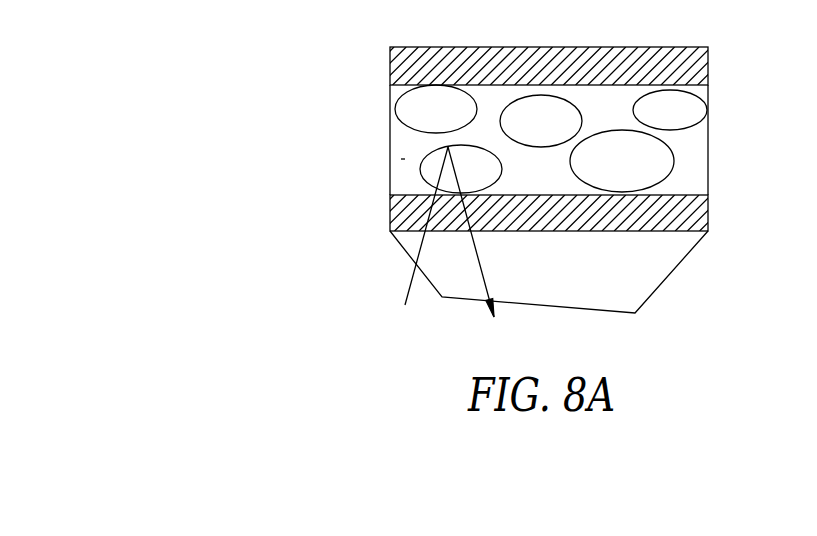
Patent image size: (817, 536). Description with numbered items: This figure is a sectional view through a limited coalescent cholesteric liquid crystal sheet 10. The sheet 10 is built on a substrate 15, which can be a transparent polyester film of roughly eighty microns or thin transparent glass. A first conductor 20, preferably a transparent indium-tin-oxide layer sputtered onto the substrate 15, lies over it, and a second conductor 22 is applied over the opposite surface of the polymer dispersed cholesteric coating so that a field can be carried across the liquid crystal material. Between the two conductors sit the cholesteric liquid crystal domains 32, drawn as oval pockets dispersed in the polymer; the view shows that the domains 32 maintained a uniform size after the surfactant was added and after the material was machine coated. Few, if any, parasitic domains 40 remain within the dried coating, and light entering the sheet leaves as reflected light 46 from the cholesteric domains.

The sheet 10 is at (248, 103).
The second conductor 22 is at (708, 75).
The first conductor 20 is at (708, 222).
The domains 32 is at (407, 101).
The substrate 15 is at (683, 262).
The parasitic domains 40 is at (422, 242).
The reflected light 46 is at (477, 245).